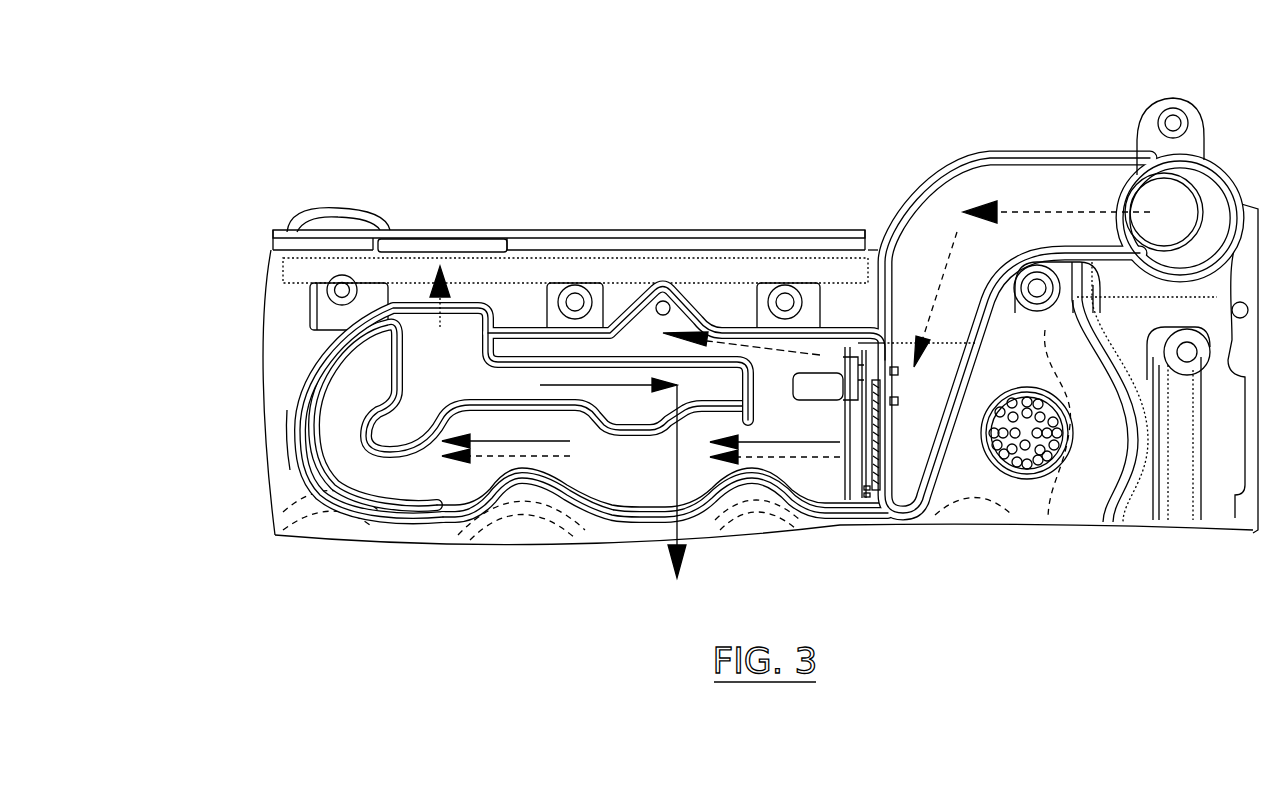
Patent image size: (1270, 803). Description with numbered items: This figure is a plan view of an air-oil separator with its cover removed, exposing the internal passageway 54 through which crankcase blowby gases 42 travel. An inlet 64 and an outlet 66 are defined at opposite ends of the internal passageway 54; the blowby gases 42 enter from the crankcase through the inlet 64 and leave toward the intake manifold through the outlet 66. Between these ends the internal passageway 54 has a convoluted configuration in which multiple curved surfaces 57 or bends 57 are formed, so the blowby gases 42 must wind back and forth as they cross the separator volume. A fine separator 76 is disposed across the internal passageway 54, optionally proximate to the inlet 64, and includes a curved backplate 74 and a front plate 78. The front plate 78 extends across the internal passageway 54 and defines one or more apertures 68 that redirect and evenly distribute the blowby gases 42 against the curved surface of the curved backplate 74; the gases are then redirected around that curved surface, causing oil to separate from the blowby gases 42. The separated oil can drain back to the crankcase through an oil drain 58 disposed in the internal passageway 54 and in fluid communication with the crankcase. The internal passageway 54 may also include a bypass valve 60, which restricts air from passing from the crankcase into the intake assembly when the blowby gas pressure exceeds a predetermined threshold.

The blowby gases 42 is at (957, 232).
The internal passageway 54 is at (912, 222).
The curved surfaces or bends 57 is at (312, 428).
The oil drain 58 is at (660, 296).
The bypass valve 60 is at (818, 380).
The inlet 64 is at (1152, 128).
The outlet 66 is at (462, 300).
The apertures 68 is at (312, 389).
The curved backplate 74 is at (848, 467).
The fine separator 76 is at (893, 462).
The front plate 78 is at (878, 432).